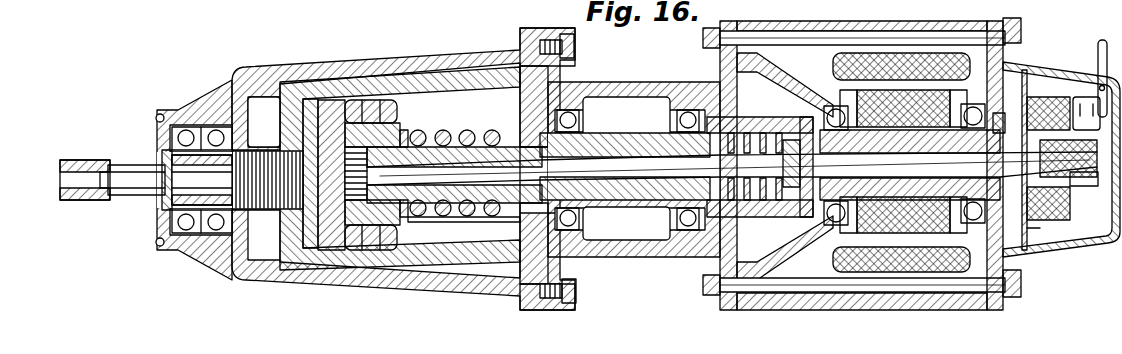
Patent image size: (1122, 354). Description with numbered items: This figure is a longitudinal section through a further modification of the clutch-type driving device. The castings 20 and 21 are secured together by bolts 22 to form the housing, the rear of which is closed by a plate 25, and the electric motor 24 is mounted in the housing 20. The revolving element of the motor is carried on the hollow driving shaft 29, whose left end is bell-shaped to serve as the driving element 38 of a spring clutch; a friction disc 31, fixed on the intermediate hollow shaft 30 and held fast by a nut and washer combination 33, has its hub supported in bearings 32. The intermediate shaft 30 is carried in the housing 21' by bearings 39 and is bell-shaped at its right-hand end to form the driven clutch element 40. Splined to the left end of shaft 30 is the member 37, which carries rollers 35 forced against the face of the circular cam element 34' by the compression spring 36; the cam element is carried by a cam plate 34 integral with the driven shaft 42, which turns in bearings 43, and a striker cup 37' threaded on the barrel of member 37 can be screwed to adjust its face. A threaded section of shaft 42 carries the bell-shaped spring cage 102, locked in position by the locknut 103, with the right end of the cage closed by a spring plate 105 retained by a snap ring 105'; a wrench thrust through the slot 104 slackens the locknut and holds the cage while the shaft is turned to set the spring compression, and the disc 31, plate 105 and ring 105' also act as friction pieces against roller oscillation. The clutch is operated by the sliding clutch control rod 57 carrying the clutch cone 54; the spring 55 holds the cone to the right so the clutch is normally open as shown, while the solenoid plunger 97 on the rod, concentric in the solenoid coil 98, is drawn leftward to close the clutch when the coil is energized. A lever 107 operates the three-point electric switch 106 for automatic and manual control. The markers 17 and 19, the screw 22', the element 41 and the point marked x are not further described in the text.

The section line 17 is at (390, 40).
The section line 19 is at (268, 22).
The casting 20 is at (845, 26).
The casting 21 is at (403, 169).
The housing 21' is at (634, 158).
The bolts 22 is at (837, 161).
The flange screw 22' is at (564, 311).
The electric motor 24 is at (916, 58).
The plate 25 is at (1114, 245).
The hollow driving shaft 29 is at (995, 200).
The hollow shaft 30 is at (462, 216).
The friction disc 31 is at (412, 132).
The bearings 32 is at (828, 101).
The nut and washer combination 33 is at (994, 124).
The cam plate 34 is at (295, 219).
The circular cam element 34' is at (331, 226).
The rollers 35 is at (388, 128).
The compression spring 36 is at (490, 131).
The member 37 is at (389, 162).
The striker cup 37' is at (339, 231).
The driving element 38 is at (770, 258).
The bearings 39 is at (640, 97).
The driven clutch element 40 is at (722, 122).
The clutch disc 41 is at (779, 132).
The driven shaft 42 is at (133, 191).
The bearings 43 is at (214, 133).
The clutch cone 54 is at (790, 190).
The spring 55 is at (746, 132).
The sliding clutch control rod 57 is at (498, 222).
The solenoid plunger 97 is at (1080, 187).
The solenoid coil 98 is at (1067, 222).
The spring cage 102 is at (433, 264).
The locknut 103 is at (236, 244).
The slot 104 is at (263, 95).
The spring plate 105 is at (507, 199).
The snap ring 105' is at (534, 191).
The three-point electric switch 106 is at (1088, 96).
The lever 107 is at (1090, 178).
The point x is at (1041, 230).